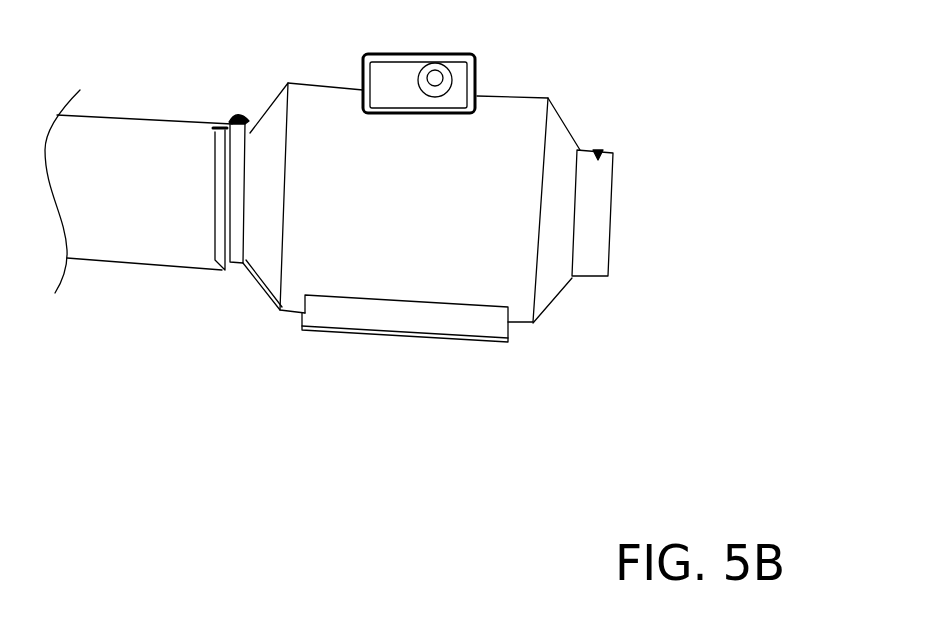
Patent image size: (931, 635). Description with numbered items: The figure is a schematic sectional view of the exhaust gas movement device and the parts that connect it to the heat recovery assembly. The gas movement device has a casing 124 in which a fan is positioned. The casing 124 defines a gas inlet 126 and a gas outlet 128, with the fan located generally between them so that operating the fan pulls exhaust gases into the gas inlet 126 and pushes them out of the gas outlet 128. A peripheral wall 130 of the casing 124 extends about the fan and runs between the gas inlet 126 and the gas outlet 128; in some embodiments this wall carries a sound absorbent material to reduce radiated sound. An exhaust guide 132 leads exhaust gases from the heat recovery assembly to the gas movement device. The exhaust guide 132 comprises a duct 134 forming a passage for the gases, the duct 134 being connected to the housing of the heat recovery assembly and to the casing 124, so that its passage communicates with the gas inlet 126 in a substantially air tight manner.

The casing 124 is at (507, 92).
The gas inlet 126 is at (243, 263).
The gas outlet 128 is at (610, 258).
The peripheral wall 130 is at (523, 330).
The exhaust guide 132 is at (183, 278).
The duct 134 is at (98, 260).